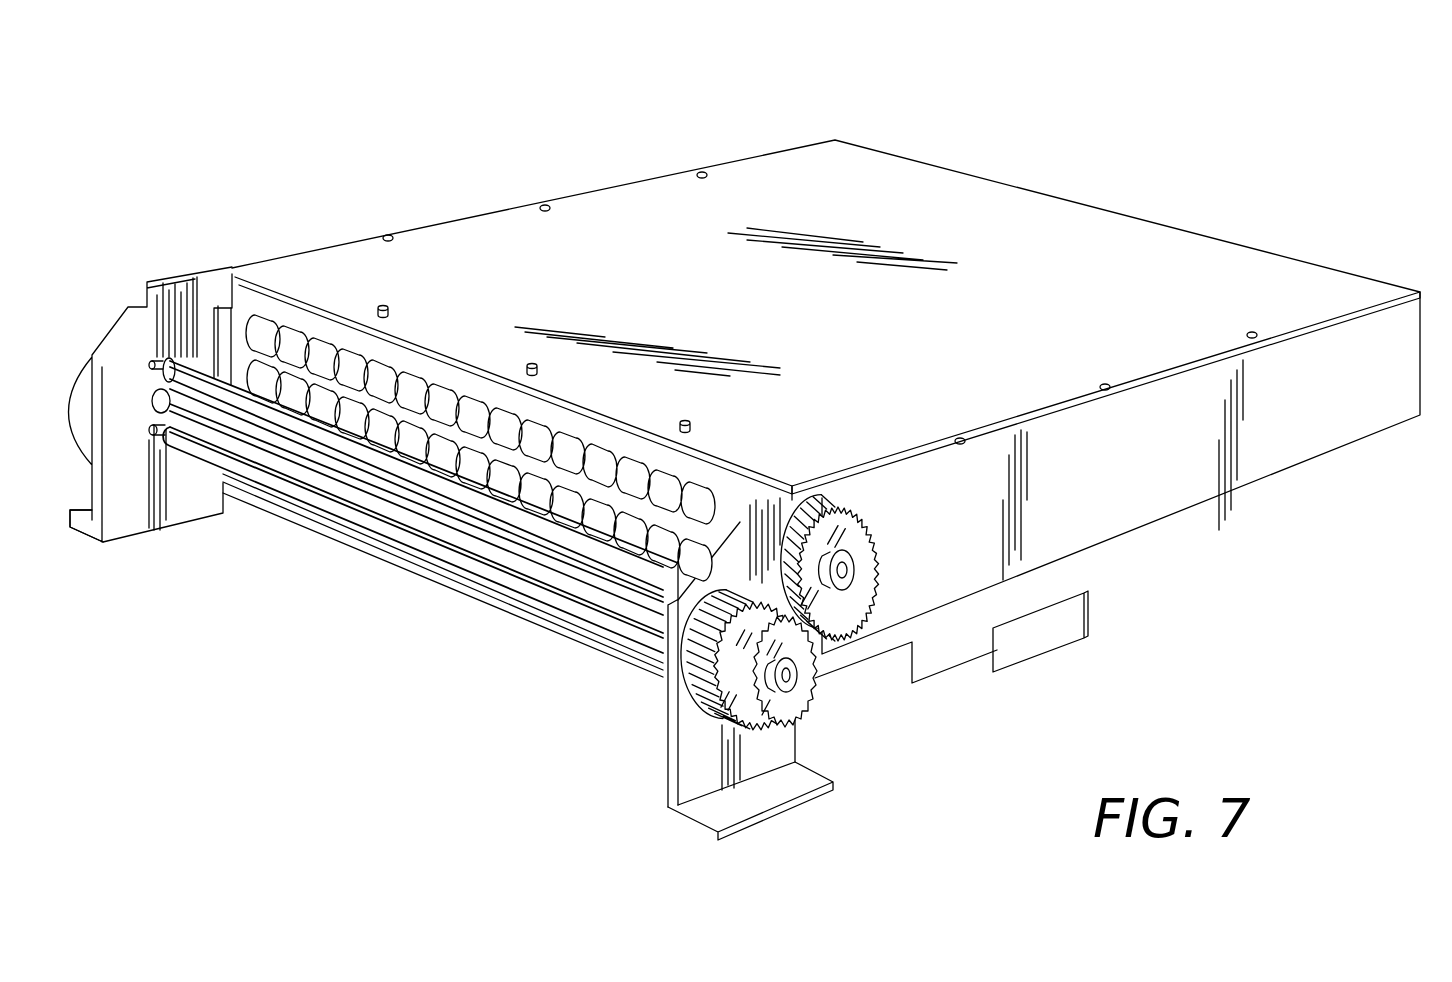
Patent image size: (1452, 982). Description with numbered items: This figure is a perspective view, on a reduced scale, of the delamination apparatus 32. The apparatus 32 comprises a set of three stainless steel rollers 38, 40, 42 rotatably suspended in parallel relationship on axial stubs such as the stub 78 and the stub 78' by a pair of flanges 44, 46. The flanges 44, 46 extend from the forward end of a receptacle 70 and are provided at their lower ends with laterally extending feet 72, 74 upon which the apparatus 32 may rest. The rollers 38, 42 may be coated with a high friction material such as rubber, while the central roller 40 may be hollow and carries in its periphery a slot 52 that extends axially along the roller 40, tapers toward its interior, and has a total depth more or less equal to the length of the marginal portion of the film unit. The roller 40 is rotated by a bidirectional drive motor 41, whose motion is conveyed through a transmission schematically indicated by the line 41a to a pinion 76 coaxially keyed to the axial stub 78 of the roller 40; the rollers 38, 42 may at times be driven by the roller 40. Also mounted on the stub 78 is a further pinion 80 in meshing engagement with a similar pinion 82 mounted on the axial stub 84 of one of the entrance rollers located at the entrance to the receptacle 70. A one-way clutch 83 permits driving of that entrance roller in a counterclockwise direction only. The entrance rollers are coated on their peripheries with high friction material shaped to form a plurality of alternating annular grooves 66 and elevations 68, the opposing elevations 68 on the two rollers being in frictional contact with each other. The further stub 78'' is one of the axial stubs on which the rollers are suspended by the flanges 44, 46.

The delamination apparatus 32 is at (580, 118).
The receptacle 70 is at (778, 168).
The flange 46 is at (200, 268).
The roller 38 is at (190, 322).
The axial stub 78' is at (138, 354).
The roller 40 is at (160, 386).
The roller shaft 78'' is at (135, 437).
The roller 42 is at (187, 453).
The foot 74 is at (73, 513).
The slot 52 is at (393, 502).
The annular grooves 66 is at (577, 517).
The elevations 68 is at (667, 550).
The pinion 82 is at (858, 523).
The one-way clutch 83 is at (850, 554).
The axial stub 84 is at (858, 596).
The transmission 41a is at (913, 660).
The drive motor 41 is at (1063, 647).
The pinion 80 is at (700, 697).
The pinion 76 is at (735, 740).
The axial stub 78 is at (793, 682).
The flange 44 is at (700, 768).
The foot 72 is at (797, 780).